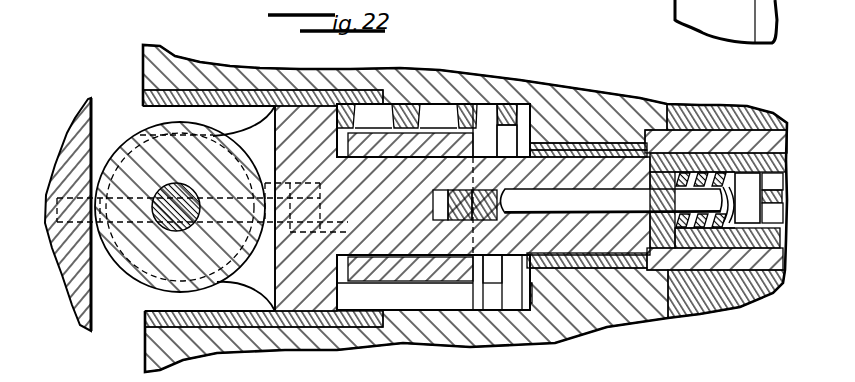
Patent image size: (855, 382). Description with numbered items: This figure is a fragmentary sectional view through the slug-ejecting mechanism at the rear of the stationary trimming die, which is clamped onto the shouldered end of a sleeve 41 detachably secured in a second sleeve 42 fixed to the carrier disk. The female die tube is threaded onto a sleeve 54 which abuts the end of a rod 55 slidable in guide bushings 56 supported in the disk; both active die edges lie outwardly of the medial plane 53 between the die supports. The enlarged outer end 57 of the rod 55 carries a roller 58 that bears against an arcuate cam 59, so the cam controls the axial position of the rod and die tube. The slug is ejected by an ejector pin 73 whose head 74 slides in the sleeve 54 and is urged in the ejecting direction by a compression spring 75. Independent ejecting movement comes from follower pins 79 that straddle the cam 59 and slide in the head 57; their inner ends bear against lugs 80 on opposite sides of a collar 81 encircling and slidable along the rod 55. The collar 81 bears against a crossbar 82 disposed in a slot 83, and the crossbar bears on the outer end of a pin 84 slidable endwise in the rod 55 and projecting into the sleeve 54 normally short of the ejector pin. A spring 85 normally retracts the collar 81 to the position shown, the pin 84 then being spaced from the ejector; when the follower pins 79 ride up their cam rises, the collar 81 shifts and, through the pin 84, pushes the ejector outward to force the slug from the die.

The sleeve 41 is at (720, 133).
The second sleeve 42 is at (757, 128).
The medial plane 53 is at (249, 97).
The sleeve 54 is at (726, 294).
The rod 55 is at (582, 155).
The guide bushings 56 is at (613, 143).
The enlarged outer end 57 is at (308, 115).
The roller 58 is at (133, 279).
The arcuate cam 59 is at (92, 124).
The ejector pin 73 is at (773, 209).
The head 74 is at (747, 177).
The compression spring 75 is at (707, 236).
The follower pins 79 is at (53, 243).
The lugs 80 is at (300, 243).
The collar 81 is at (433, 283).
The crossbar 82 is at (484, 191).
The slot 83 is at (439, 192).
The pin 84 is at (575, 194).
The spring 85 is at (428, 111).